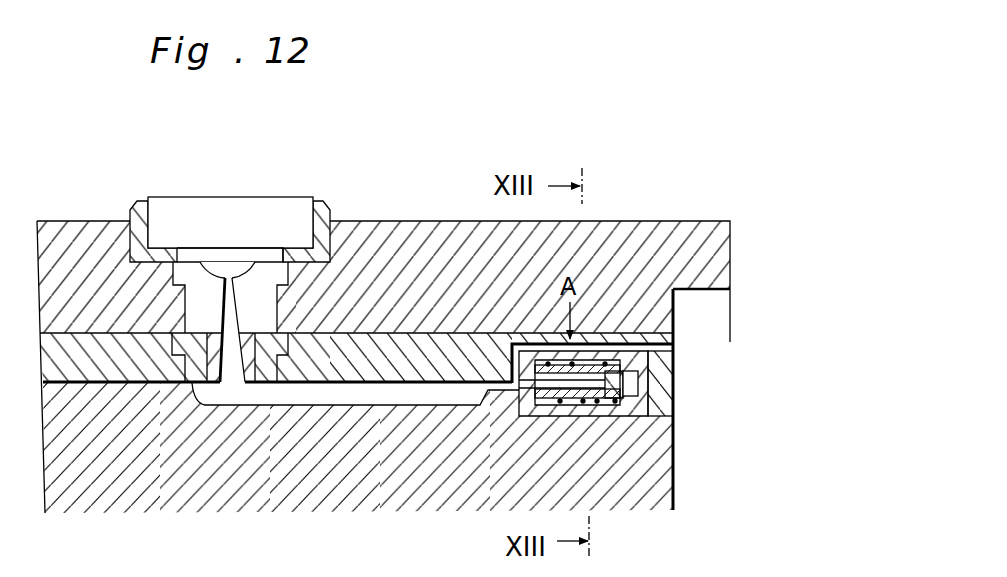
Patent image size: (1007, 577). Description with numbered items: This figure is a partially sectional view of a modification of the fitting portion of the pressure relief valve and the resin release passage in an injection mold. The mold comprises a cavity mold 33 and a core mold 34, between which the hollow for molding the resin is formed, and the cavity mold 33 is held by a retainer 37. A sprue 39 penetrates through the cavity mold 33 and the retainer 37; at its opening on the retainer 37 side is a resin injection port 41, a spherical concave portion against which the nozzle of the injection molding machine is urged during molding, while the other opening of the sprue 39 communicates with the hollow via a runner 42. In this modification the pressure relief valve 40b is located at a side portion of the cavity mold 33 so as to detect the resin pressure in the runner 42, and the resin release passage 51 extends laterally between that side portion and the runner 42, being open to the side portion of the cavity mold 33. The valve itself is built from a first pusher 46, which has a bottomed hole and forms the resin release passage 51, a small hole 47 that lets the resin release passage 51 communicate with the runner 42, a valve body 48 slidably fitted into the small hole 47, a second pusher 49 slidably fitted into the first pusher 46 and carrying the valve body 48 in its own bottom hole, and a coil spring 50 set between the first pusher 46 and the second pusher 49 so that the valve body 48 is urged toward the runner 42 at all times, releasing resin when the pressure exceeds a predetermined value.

The cavity mold 33 is at (640, 330).
The core mold 34 is at (657, 470).
The retainer 37 is at (690, 243).
The sprue 39 is at (232, 297).
The pressure relief valve 40b is at (682, 377).
The resin injection port 41 is at (212, 272).
The runner 42 is at (315, 386).
The first pusher 46 is at (655, 382).
The small hole 47 is at (520, 403).
The valve body 48 is at (515, 398).
The second pusher 49 is at (615, 384).
The coil spring 50 is at (592, 389).
The resin release passage 51 is at (648, 345).